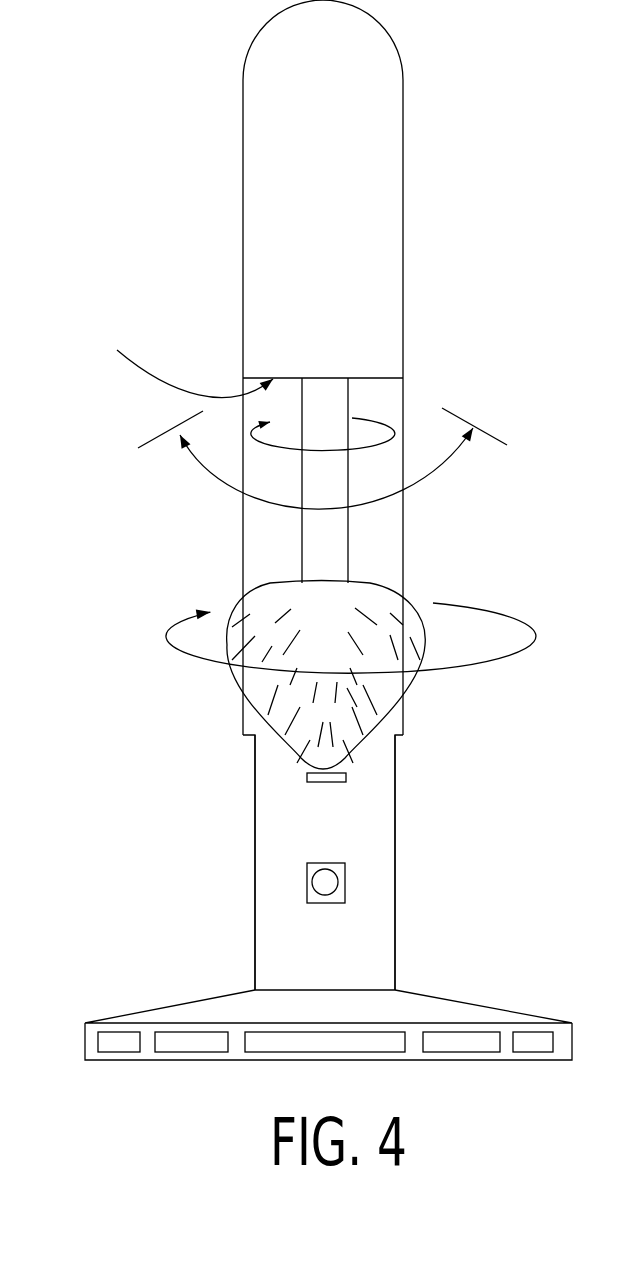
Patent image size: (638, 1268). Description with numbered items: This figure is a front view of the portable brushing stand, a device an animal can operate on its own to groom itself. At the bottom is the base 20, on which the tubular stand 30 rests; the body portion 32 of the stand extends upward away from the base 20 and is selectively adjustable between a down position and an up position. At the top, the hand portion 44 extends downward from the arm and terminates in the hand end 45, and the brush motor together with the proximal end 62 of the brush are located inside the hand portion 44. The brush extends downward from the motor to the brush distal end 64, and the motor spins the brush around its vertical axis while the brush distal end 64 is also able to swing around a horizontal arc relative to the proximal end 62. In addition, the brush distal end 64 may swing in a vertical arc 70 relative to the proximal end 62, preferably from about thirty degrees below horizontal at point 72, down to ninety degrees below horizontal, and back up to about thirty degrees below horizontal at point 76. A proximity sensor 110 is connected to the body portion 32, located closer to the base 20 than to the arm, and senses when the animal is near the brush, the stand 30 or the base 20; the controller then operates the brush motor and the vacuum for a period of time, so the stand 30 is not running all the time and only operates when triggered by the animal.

The base 20 is at (435, 1007).
The stand 30 is at (277, 915).
The body portion 32 is at (382, 798).
The hand portion 44 is at (378, 142).
The hand end 45 is at (177, 364).
The proximal end 62 is at (338, 397).
The brush distal end 64 is at (290, 740).
The vertical arc 70 is at (422, 480).
The horizontal point 72 is at (152, 438).
The horizontal point 76 is at (492, 433).
The proximity sensor 110 is at (332, 883).